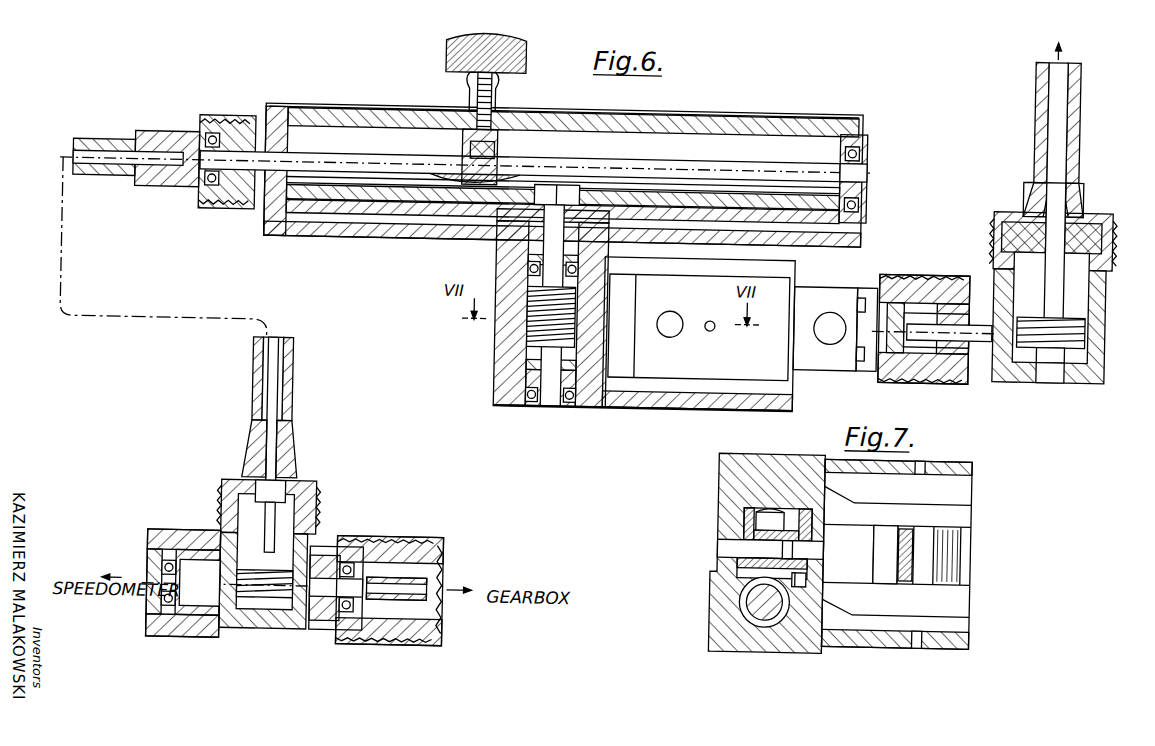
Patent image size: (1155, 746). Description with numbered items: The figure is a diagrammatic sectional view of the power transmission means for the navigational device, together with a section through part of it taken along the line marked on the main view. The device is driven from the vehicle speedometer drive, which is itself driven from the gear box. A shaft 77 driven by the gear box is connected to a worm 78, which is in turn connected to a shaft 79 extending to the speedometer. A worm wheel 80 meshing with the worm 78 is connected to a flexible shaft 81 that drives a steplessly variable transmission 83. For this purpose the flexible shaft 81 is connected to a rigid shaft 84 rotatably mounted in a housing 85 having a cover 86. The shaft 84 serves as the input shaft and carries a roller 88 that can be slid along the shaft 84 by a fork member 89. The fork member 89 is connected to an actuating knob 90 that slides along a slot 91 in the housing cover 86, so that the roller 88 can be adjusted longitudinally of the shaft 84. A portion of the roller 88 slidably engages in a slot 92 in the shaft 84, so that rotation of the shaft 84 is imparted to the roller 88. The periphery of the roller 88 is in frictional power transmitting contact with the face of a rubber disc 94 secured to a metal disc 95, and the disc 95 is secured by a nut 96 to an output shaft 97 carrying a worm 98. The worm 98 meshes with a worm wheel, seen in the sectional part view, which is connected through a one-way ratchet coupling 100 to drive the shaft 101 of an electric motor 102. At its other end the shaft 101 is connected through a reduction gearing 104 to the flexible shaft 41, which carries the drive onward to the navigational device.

In FIG. 6, the flexible shaft 41 is at (1050, 92).
In FIG. 6, the shaft 77 is at (438, 588).
In FIG. 6, the worm 78 is at (338, 580).
In FIG. 6, the shaft 79 is at (163, 583).
In FIG. 6, the worm wheel 80 is at (252, 586).
In FIG. 6, the flexible shaft 81 is at (293, 348).
In FIG. 6, the steplessly variable transmission 83 is at (282, 104).
In FIG. 6, the rigid shaft 84 is at (680, 165).
In FIG. 6, the housing 85 is at (857, 134).
In FIG. 6, the cover 86 is at (781, 122).
In FIG. 6, the roller 88 is at (495, 150).
In FIG. 6, the fork member 89 is at (464, 150).
In FIG. 6, the actuating knob 90 is at (450, 56).
In FIG. 7, the actuating knob 90 is at (760, 518).
In FIG. 6, the slot 91 is at (354, 110).
In FIG. 6, the slot 92 is at (450, 160).
In FIG. 6, the rubber disc 94 is at (836, 192).
In FIG. 6, the metal disc 95 is at (840, 212).
In FIG. 6, the nut 96 is at (562, 188).
In FIG. 6, the output shaft 97 is at (555, 247).
In FIG. 6, the worm 98 is at (542, 332).
In FIG. 7, the worm 98 is at (758, 597).
In FIG. 7, the one-way ratchet coupling 100 is at (818, 598).
In FIG. 7, the shaft 101 is at (728, 545).
In FIG. 7, the electric motor 102 is at (955, 598).
In FIG. 6, the reduction gearing 104 is at (1112, 330).